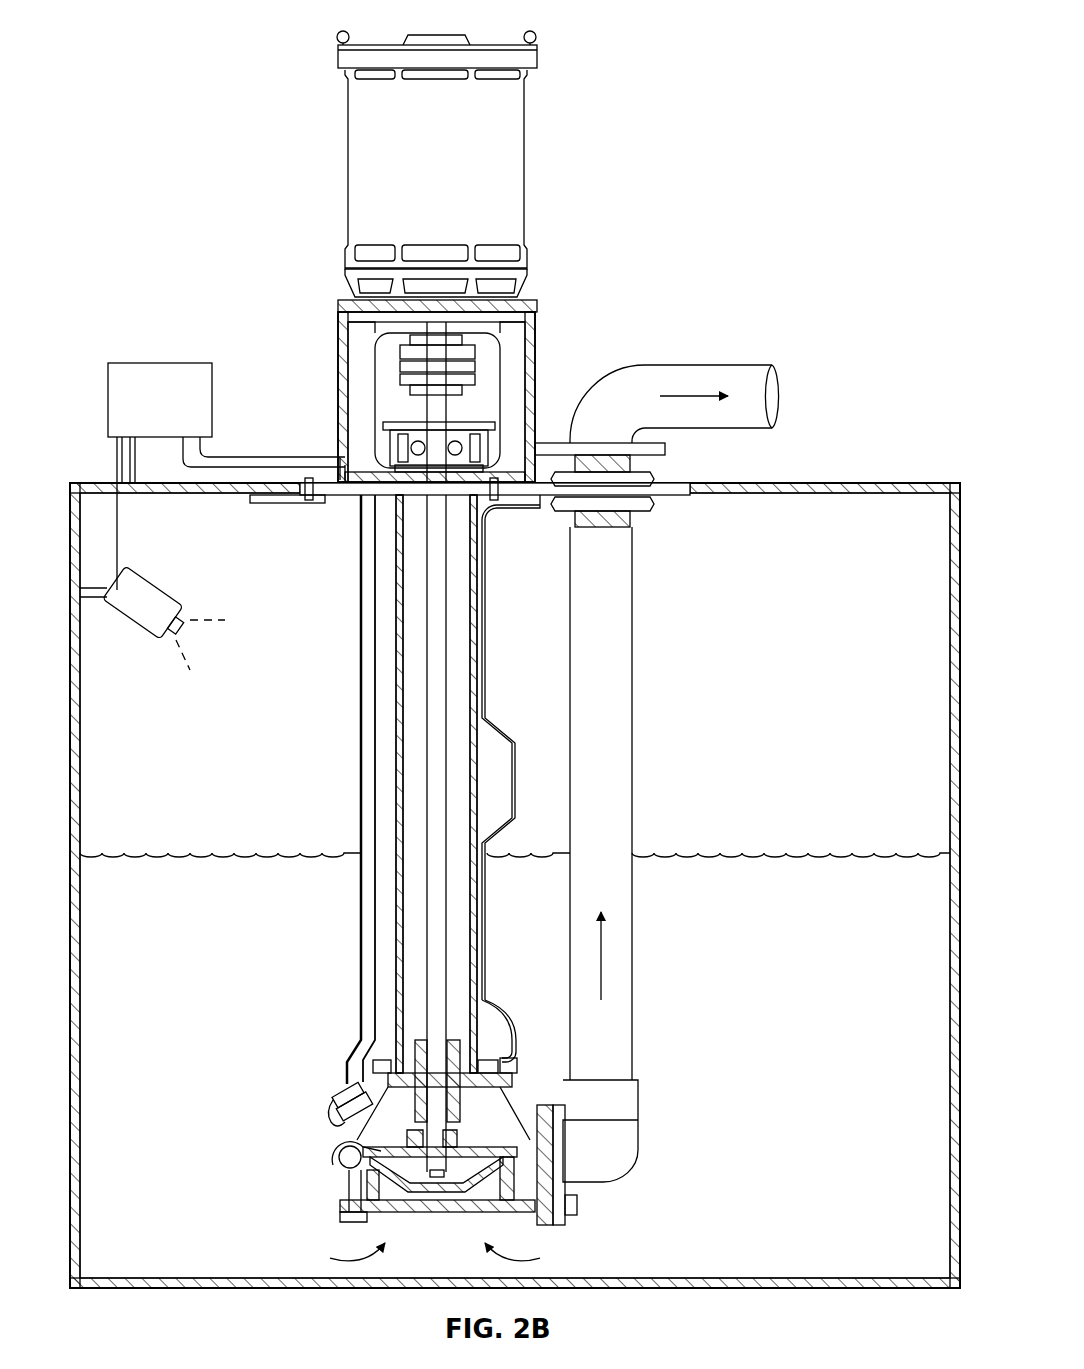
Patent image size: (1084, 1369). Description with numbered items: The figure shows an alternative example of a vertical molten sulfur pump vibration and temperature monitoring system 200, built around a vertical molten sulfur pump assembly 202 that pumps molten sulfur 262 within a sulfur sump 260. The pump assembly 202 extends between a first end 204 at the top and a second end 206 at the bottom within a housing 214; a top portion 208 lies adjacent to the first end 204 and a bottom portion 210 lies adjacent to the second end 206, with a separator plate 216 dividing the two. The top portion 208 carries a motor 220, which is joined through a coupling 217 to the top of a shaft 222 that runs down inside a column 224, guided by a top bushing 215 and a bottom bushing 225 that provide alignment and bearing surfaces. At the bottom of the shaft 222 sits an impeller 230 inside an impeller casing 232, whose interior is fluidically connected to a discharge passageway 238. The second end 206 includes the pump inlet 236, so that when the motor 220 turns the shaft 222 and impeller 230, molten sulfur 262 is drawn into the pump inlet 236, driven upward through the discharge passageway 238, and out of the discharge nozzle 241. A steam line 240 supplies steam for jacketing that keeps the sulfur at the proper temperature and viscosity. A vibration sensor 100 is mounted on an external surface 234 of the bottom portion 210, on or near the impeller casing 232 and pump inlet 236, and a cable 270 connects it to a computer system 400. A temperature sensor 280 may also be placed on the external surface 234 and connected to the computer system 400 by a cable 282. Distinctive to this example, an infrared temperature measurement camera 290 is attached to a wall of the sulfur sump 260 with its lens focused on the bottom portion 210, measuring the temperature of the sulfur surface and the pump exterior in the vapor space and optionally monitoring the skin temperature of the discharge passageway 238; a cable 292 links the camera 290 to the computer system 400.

The vibration sensor 100 is at (363, 1090).
The vertical molten sulfur pump vibration and temperature monitoring system 200 is at (119, 47).
The vertical molten sulfur pump assembly 202 is at (240, 244).
The first end 204 is at (332, 48).
The second end 206 is at (335, 1227).
The top portion 208 is at (815, 176).
The bottom portion 210 is at (292, 794).
The housing 214 is at (537, 338).
The top bushing 215 is at (415, 422).
The separator plate 216 is at (671, 497).
The coupling 217 is at (400, 348).
The motor 220 is at (460, 176).
The shaft 222 is at (446, 700).
The column 224 is at (470, 657).
The bottom bushing 225 is at (504, 1055).
The impeller 230 is at (382, 1160).
The impeller casing 232 is at (336, 1166).
The external surface 234 is at (350, 1133).
The pump inlet 236 is at (455, 1212).
The discharge passageway 238 is at (634, 700).
The steam line 240 is at (484, 928).
The discharge nozzle 241 is at (666, 450).
The sulfur sump 260 is at (853, 689).
The molten sulfur 262 is at (815, 1099).
The cable 270 is at (361, 644).
The temperature sensor 280 is at (342, 1111).
The cable 282 is at (367, 581).
The infrared temperature measurement camera 290 is at (157, 585).
The cable 292 is at (112, 468).
The computer system 400 is at (153, 362).